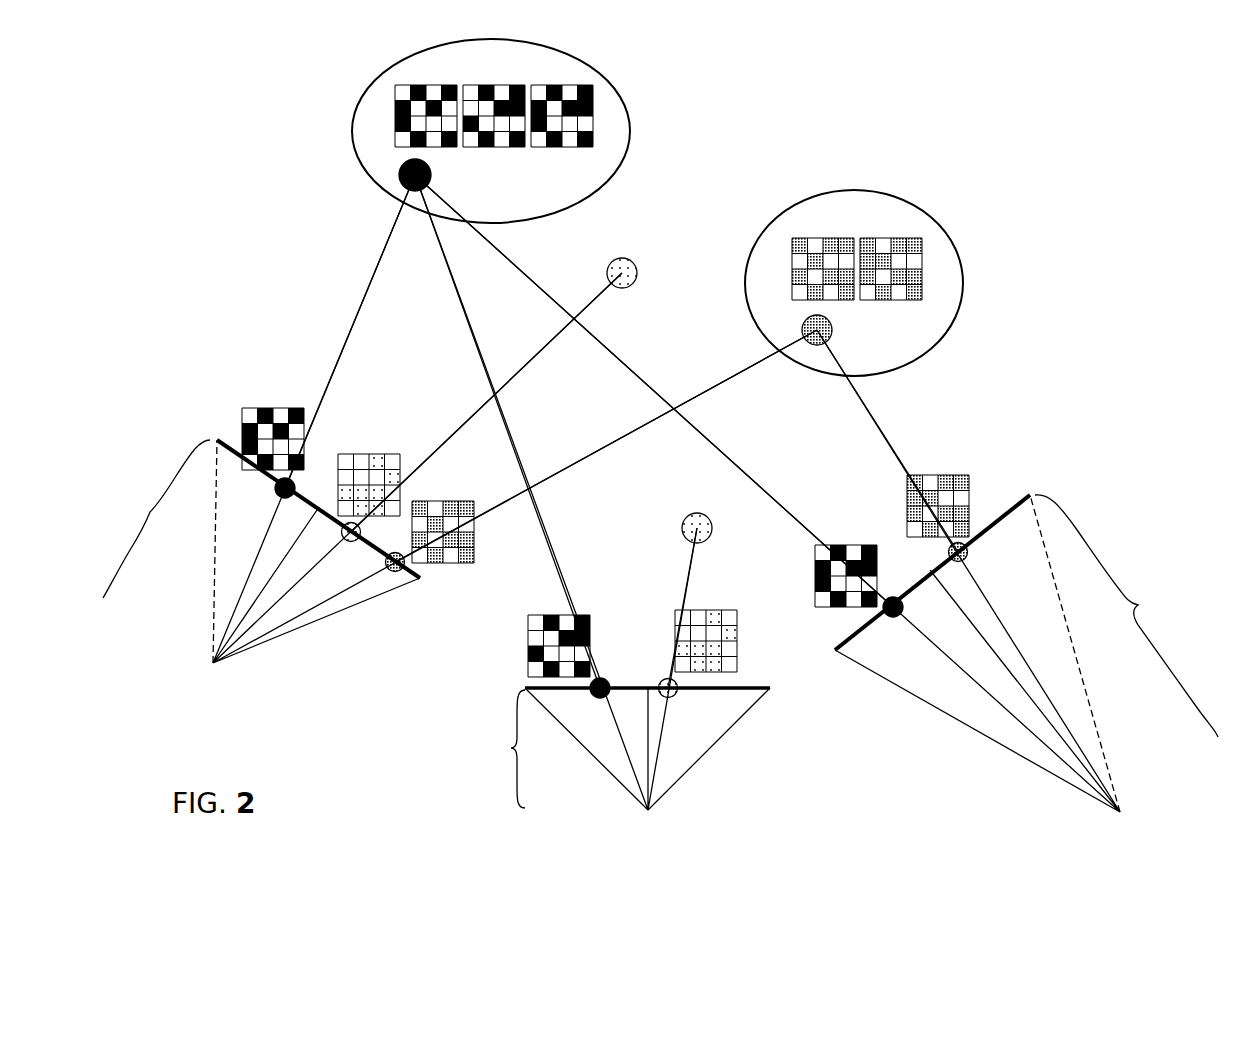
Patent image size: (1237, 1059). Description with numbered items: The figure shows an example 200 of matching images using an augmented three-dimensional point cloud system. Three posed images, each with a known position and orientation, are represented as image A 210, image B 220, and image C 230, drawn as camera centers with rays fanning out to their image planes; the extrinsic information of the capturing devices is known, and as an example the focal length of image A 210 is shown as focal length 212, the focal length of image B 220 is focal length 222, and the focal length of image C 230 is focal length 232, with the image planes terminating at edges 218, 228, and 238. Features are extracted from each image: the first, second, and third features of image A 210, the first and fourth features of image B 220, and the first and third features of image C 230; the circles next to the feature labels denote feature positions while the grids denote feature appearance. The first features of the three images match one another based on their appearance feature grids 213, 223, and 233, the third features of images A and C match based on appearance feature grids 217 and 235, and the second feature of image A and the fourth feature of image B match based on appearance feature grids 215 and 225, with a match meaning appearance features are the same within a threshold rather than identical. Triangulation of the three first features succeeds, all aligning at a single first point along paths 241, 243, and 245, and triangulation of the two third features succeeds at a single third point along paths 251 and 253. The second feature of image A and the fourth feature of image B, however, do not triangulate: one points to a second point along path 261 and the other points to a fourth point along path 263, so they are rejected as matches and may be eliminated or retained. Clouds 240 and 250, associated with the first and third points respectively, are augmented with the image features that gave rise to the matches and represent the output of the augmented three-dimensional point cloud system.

The example of matching images 200 is at (158, 84).
The posed image A 210 is at (227, 680).
The focal length of image A 212 is at (156, 519).
The appearance feature grid of feature a1 213 is at (242, 426).
The appearance feature grid of feature a2 215 is at (350, 453).
The appearance feature grid of feature a3 217 is at (443, 500).
The image plane A edge 218 is at (413, 582).
The posed image B 220 is at (630, 832).
The focal length of image B 222 is at (494, 749).
The appearance feature grid of feature b1 223 is at (527, 638).
The appearance feature grid of feature b4 225 is at (673, 619).
The image plane B edge 228 is at (771, 689).
The posed image C 230 is at (1110, 831).
The focal length of image C 232 is at (1126, 616).
The appearance feature grid of feature c1 233 is at (816, 601).
The appearance feature grid of feature c3 235 is at (905, 510).
The image plane C edge 238 is at (1038, 496).
The cloud 240 is at (629, 148).
The path 241 is at (362, 302).
The path 243 is at (550, 550).
The path 245 is at (725, 455).
The cloud 250 is at (952, 322).
The path 251 is at (730, 383).
The path 253 is at (868, 400).
The path 261 is at (523, 367).
The path 263 is at (690, 566).